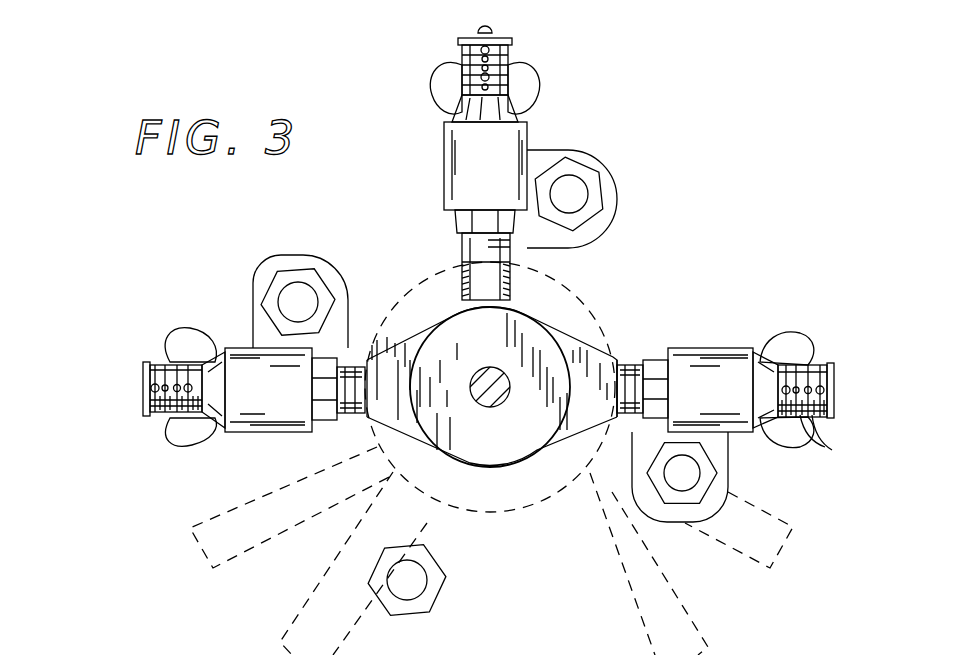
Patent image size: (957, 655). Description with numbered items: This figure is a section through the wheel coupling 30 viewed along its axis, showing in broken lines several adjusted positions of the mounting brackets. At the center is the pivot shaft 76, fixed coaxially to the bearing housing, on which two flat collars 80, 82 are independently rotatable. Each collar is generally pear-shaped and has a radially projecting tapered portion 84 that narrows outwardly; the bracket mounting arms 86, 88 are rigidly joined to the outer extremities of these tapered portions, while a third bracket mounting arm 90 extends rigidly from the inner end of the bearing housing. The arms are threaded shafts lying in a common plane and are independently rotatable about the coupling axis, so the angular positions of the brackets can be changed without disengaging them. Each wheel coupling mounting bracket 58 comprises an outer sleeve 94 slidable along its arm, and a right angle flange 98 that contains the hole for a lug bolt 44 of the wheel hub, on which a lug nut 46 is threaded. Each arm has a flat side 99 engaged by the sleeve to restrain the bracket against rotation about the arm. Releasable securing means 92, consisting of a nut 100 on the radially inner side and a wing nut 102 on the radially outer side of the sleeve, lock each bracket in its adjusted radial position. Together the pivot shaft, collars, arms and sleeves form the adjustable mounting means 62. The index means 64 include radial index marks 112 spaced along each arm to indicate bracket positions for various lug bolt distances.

The wheel coupling 30 is at (240, 247).
The lug bolt 44 is at (292, 300).
The lug nut 46 is at (305, 262).
The wheel coupling mounting bracket 58 is at (444, 135).
The adjustable mounting means 62 is at (455, 40).
The index means 64 is at (162, 372).
The pivot shaft 76 is at (490, 397).
The collar 80 is at (466, 430).
The collar 82 is at (569, 327).
The tapered portion 84 is at (577, 347).
The bracket mounting arm 86 is at (330, 426).
The bracket mounting arm 88 is at (806, 378).
The third bracket mounting arm 90 is at (462, 248).
The releasable securing means 92 is at (430, 78).
The outer sleeve 94 is at (444, 167).
The right angle flange 98 is at (318, 262).
The flat side 99 is at (607, 437).
The nut 100 is at (338, 362).
The wing nut 102 is at (198, 336).
The radial index mark 112 is at (818, 412).